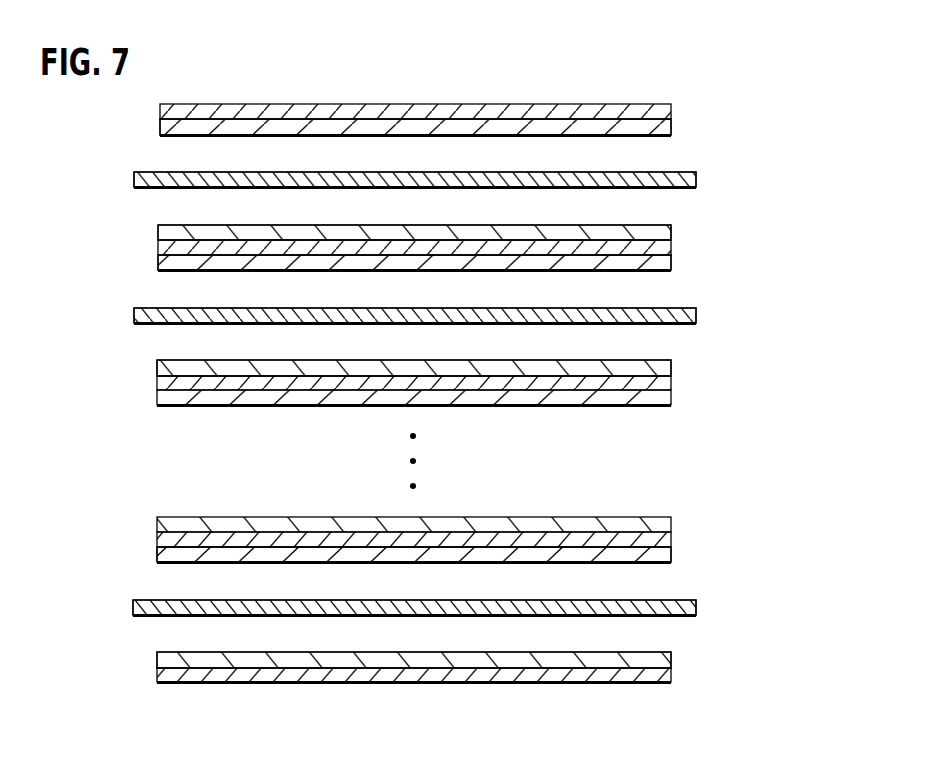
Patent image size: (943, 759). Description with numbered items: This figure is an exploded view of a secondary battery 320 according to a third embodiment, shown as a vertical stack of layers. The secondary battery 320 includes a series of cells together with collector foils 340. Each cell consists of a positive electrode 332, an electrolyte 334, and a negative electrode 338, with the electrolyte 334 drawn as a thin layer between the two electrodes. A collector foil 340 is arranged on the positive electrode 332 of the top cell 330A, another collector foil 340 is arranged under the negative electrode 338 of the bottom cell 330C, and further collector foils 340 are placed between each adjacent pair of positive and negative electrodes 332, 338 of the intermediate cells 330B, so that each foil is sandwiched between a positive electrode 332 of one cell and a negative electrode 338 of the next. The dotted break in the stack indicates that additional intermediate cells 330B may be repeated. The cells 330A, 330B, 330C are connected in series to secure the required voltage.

The secondary battery 320 is at (578, 79).
The top cell 330A is at (786, 118).
The intermediate cell 330B is at (786, 280).
The bottom cell 330C is at (786, 570).
The positive electrode 332 is at (672, 127).
The electrolyte 334 is at (697, 179).
The negative electrode 338 is at (672, 232).
The collector foil 340 is at (672, 111).